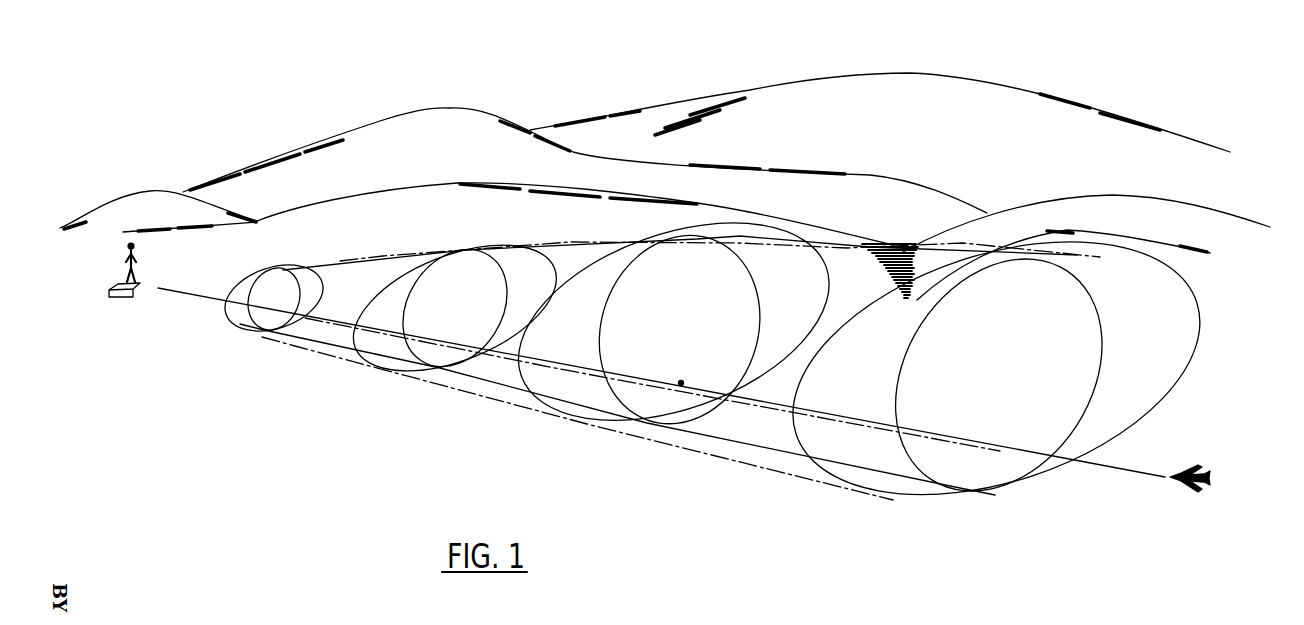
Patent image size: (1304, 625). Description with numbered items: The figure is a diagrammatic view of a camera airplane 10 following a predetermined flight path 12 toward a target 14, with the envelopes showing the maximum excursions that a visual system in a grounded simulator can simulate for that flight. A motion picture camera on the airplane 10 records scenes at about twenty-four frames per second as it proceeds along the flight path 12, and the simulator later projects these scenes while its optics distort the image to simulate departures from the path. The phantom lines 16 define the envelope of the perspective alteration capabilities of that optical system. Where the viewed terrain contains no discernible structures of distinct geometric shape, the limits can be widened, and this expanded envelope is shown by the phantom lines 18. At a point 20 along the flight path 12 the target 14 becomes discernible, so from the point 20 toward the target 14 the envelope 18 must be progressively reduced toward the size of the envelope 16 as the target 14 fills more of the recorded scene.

The airplane 10 is at (1206, 474).
The flight path 12 is at (1115, 468).
The target 14 is at (108, 291).
The phantom lines (envelope of perspective alteration) 16 is at (381, 262).
The expanded envelope (phantom lines) 18 is at (575, 242).
The point along the flight path 20 is at (692, 354).